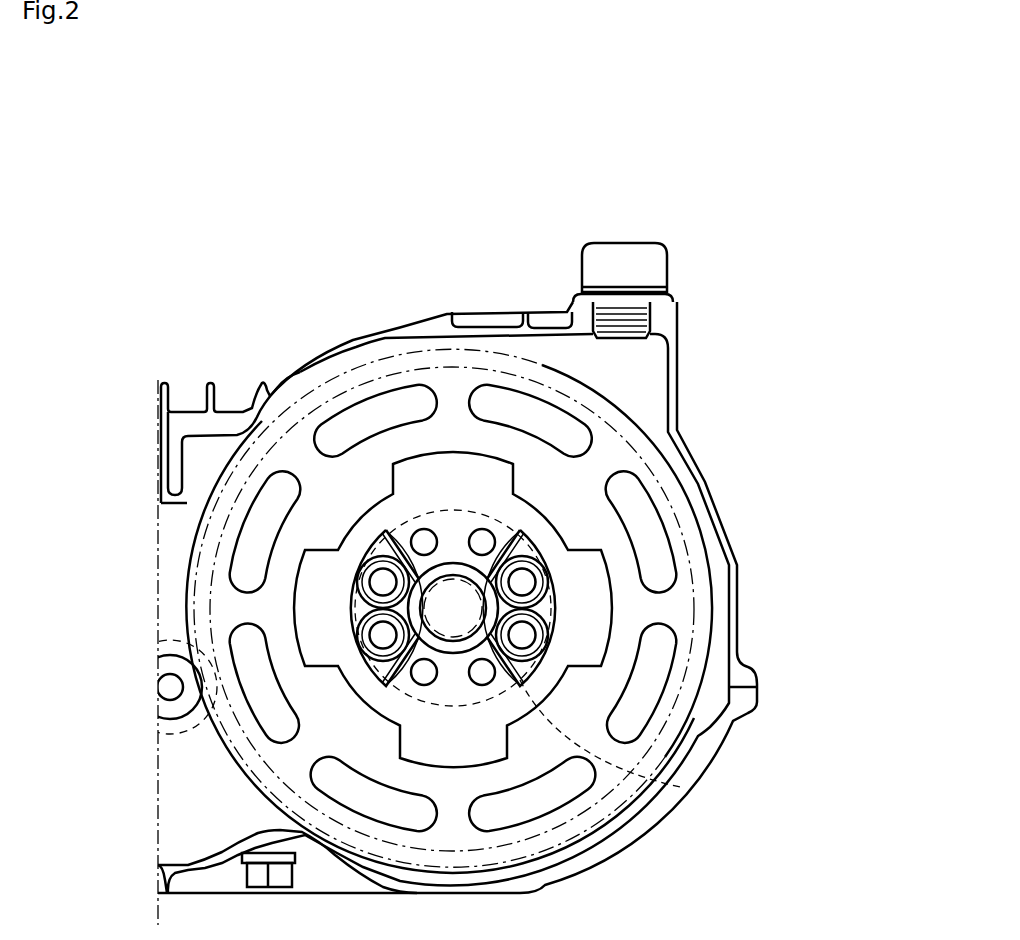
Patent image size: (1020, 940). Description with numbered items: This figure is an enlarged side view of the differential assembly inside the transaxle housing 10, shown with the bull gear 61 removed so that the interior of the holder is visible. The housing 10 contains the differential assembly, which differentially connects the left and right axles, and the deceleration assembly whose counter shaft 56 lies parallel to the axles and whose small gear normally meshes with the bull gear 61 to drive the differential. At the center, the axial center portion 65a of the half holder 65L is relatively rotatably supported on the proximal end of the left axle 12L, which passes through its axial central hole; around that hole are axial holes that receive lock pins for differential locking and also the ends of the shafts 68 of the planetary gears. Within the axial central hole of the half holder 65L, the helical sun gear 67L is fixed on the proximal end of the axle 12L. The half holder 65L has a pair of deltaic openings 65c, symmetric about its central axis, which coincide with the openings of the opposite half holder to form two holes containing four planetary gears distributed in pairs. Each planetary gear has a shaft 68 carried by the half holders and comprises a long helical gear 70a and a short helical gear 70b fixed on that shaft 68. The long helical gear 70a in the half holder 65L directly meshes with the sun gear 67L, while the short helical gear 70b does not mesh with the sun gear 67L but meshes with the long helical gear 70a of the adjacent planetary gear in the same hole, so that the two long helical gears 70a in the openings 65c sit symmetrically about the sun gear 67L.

The housing 10 is at (688, 465).
The left axle 12L is at (450, 592).
The counter shaft 56 is at (163, 688).
The bull gear 61 is at (632, 413).
The left half holder 65L is at (363, 507).
The axial center portion 65a is at (688, 793).
The deltaic opening 65c is at (522, 672).
The left sun gear 67L is at (523, 532).
The shaft 68 is at (522, 582).
The long helical gear 70a is at (357, 580).
The short helical gear 70b is at (357, 627).